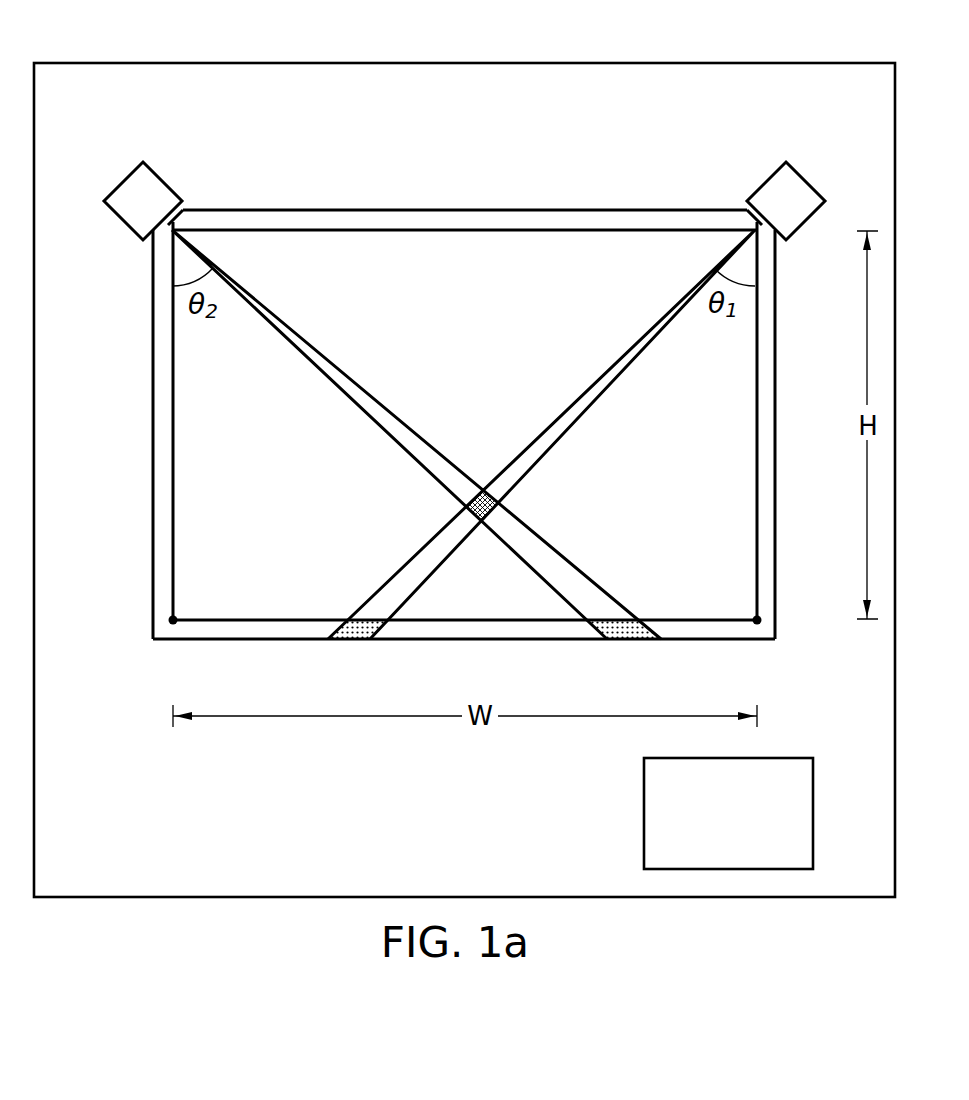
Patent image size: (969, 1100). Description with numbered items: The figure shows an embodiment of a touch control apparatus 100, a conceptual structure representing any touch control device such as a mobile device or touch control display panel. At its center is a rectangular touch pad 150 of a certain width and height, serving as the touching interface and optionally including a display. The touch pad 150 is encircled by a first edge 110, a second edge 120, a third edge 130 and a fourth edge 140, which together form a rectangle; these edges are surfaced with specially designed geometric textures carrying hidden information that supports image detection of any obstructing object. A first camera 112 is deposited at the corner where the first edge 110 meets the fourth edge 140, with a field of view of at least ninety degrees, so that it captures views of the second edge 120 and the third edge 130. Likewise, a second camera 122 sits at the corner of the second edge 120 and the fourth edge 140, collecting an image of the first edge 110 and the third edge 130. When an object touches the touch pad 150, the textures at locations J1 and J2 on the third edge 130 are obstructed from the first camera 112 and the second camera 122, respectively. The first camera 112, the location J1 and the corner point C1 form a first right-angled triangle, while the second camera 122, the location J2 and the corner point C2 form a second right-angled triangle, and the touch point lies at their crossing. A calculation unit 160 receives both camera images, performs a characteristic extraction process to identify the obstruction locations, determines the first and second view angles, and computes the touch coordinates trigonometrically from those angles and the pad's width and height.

The touch control apparatus 100 is at (478, 62).
The first edge 110 is at (776, 426).
The first camera 112 is at (763, 186).
The second edge 120 is at (153, 424).
The second camera 122 is at (166, 186).
The third edge 130 is at (478, 640).
The fourth edge 140 is at (478, 210).
The touch pad 150 is at (305, 481).
The calculation unit 160 is at (707, 861).
The corner point C1 is at (752, 616).
The corner point C2 is at (176, 616).
The obstructed location J1 is at (350, 640).
The obstructed location J2 is at (627, 640).